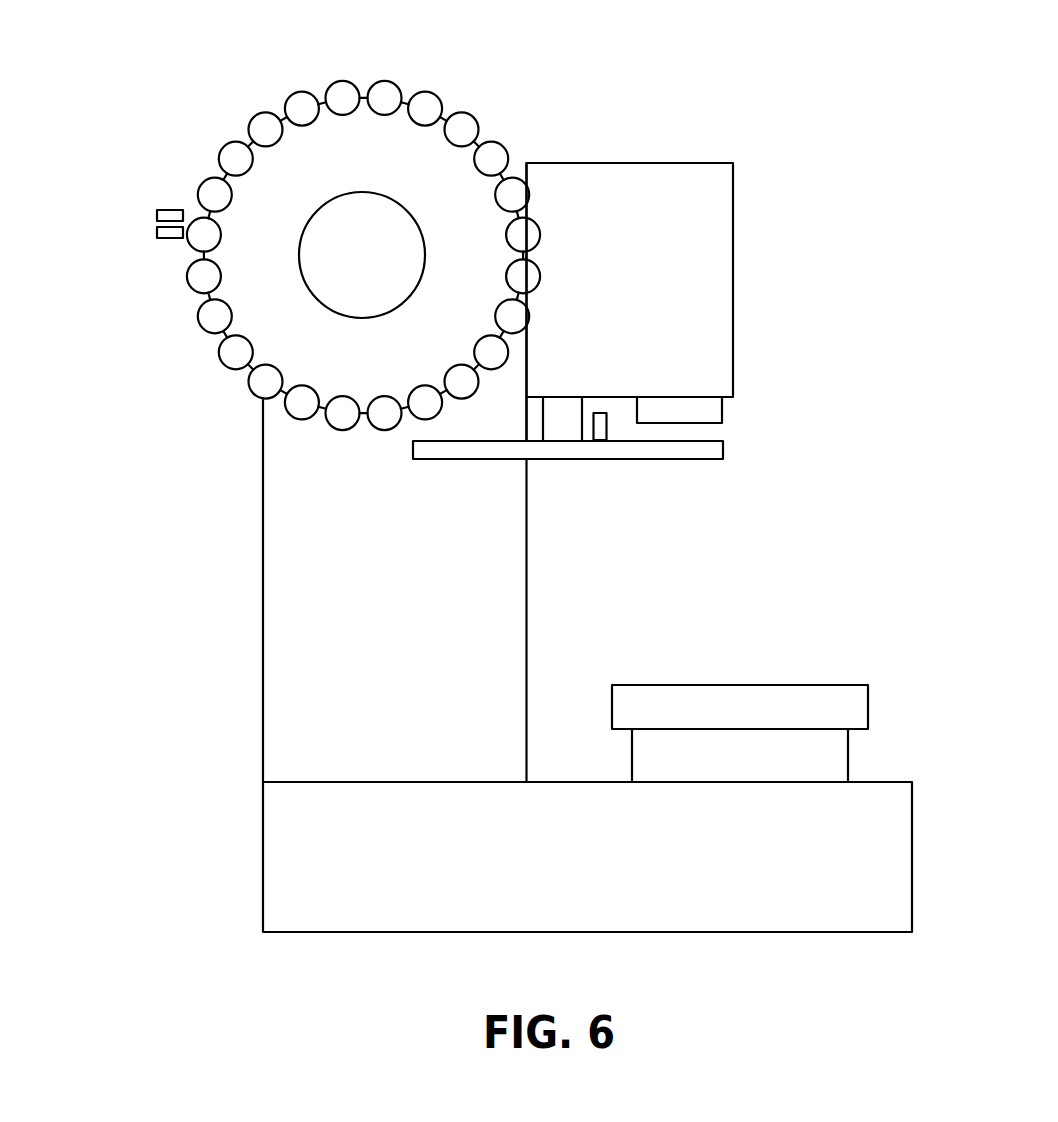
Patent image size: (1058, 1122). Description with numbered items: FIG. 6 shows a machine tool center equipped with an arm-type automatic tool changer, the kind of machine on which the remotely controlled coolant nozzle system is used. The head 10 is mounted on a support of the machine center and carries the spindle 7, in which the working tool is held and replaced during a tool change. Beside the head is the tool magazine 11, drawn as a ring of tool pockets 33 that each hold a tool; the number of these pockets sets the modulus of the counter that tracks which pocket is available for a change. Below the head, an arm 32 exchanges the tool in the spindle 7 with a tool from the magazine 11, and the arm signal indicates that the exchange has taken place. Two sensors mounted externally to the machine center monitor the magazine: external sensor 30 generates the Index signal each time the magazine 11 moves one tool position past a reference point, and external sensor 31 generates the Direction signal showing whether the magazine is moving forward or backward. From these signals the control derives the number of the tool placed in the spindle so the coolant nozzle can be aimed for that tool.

The spindle 7 is at (703, 413).
The head 10 is at (692, 228).
The tool magazine 11 is at (423, 178).
The external sensor 30 is at (156, 231).
The external sensor 31 is at (168, 210).
The arm 32 is at (600, 460).
The tool pockets 33 is at (388, 80).